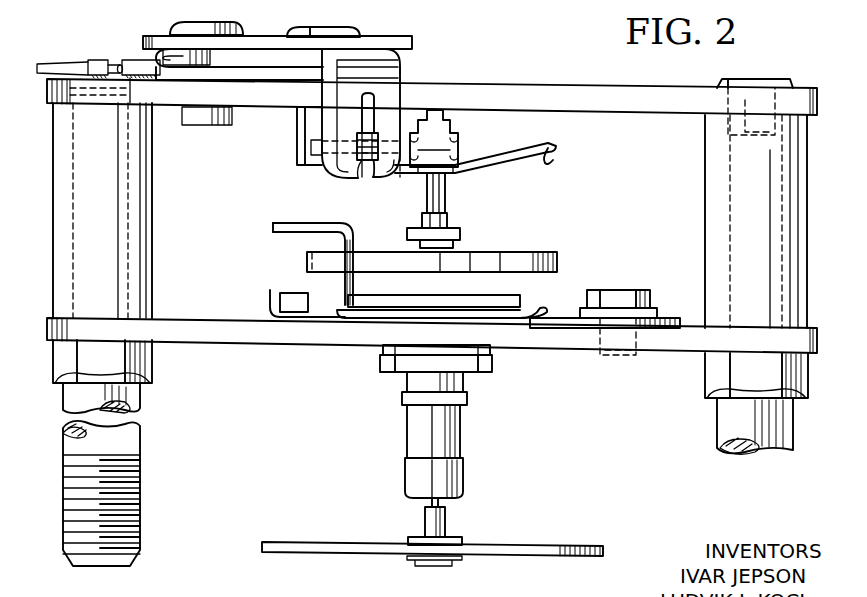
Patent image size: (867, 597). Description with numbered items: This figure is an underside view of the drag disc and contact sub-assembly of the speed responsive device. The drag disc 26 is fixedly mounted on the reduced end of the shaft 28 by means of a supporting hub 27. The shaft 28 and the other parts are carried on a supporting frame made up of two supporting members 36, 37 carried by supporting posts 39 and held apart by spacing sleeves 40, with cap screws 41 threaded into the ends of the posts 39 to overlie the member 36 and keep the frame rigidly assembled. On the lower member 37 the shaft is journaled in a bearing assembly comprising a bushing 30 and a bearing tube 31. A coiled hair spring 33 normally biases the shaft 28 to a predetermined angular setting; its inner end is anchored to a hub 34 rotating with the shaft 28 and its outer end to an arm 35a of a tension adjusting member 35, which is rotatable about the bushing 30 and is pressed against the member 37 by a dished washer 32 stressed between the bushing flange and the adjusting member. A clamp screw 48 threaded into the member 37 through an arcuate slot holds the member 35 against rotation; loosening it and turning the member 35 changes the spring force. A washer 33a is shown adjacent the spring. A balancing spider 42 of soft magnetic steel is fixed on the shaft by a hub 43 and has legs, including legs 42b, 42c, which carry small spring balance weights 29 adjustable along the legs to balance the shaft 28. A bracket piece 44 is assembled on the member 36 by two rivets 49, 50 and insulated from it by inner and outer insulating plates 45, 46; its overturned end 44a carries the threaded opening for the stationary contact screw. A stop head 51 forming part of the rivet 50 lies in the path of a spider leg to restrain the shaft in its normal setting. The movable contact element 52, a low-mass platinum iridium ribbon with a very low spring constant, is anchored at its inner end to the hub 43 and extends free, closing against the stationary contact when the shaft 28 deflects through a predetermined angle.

The drag disc 26 is at (552, 546).
The supporting hub 27 is at (446, 522).
The shaft 28 is at (448, 215).
The spring balance weight 29 is at (497, 364).
The bushing 30 is at (343, 380).
The bearing tube 31 is at (465, 442).
The dished washer 32 is at (548, 320).
The coiled hair spring 33 is at (548, 254).
The washer 33a is at (455, 240).
The hub 34 is at (422, 220).
The tension adjusting member 35 is at (680, 320).
The arm 35a is at (283, 230).
The supporting member 36 is at (598, 92).
The supporting member 37 is at (678, 345).
The supporting post 39 is at (148, 380).
The spacing sleeve 40 is at (140, 277).
The cap screw 41 is at (730, 80).
The balancing spider 42 is at (464, 177).
The spider leg 42b is at (375, 160).
The spider leg 42c is at (568, 150).
The hub 43 is at (462, 140).
The bracket piece 44 is at (368, 60).
The overturned end 44a is at (345, 172).
The inner insulating plate 45 is at (262, 80).
The outer insulating plate 46 is at (260, 40).
The clamp screw 48 is at (618, 290).
The rivet 49 is at (213, 24).
The assembly rivet 50 is at (328, 28).
The stop head 51 is at (300, 162).
The movable contact element 52 is at (310, 147).